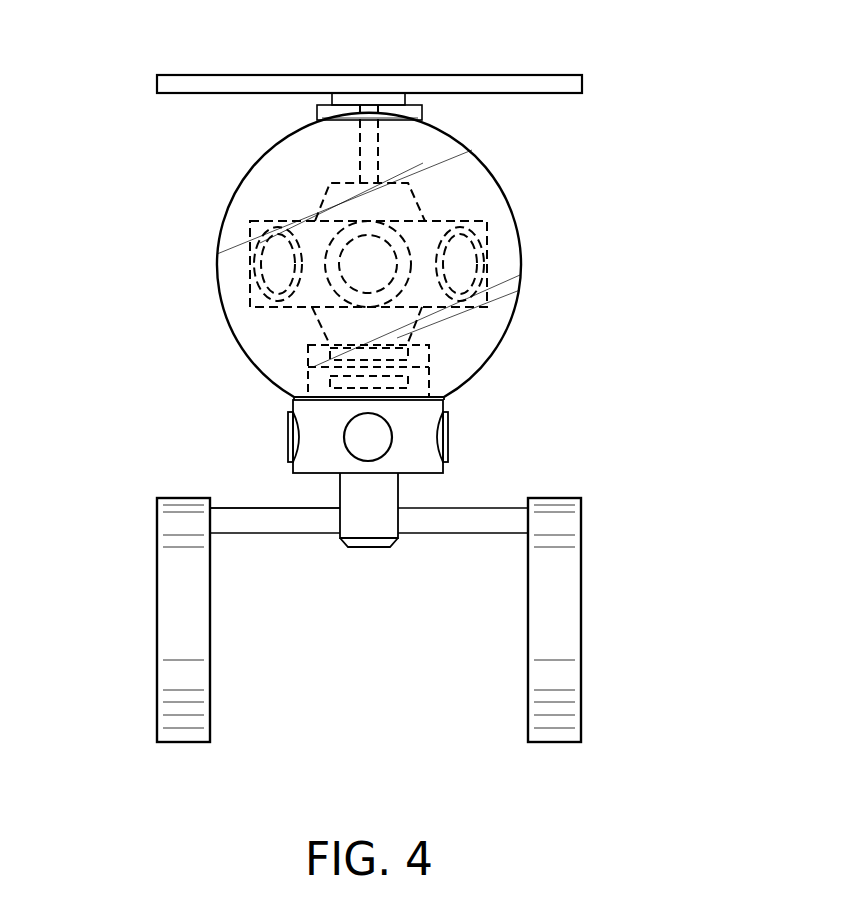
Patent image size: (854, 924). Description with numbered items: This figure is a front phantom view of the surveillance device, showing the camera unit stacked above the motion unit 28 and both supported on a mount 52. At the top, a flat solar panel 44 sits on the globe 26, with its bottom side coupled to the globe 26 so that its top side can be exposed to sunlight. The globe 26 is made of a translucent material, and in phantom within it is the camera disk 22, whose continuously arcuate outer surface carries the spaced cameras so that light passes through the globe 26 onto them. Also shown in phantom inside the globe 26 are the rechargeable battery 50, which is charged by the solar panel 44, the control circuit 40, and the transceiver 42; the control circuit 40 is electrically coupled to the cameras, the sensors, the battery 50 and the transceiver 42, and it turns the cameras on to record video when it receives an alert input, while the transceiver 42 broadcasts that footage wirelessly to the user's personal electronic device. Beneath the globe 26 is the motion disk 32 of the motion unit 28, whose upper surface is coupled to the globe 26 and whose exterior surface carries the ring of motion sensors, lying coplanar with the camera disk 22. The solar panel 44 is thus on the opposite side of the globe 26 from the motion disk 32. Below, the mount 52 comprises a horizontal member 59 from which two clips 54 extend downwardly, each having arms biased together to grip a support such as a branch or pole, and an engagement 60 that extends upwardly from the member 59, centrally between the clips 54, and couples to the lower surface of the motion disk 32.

The camera disk 22 is at (478, 221).
The globe 26 is at (500, 332).
The motion unit 28 is at (270, 433).
The motion disk 32 is at (431, 474).
The control circuit 40 is at (330, 355).
The transceiver 42 is at (410, 381).
The solar panel 44 is at (582, 88).
The rechargeable battery 50 is at (330, 183).
The mount 52 is at (175, 487).
The clips 54 is at (175, 605).
The member 59 is at (232, 530).
The engagement 60 is at (347, 480).